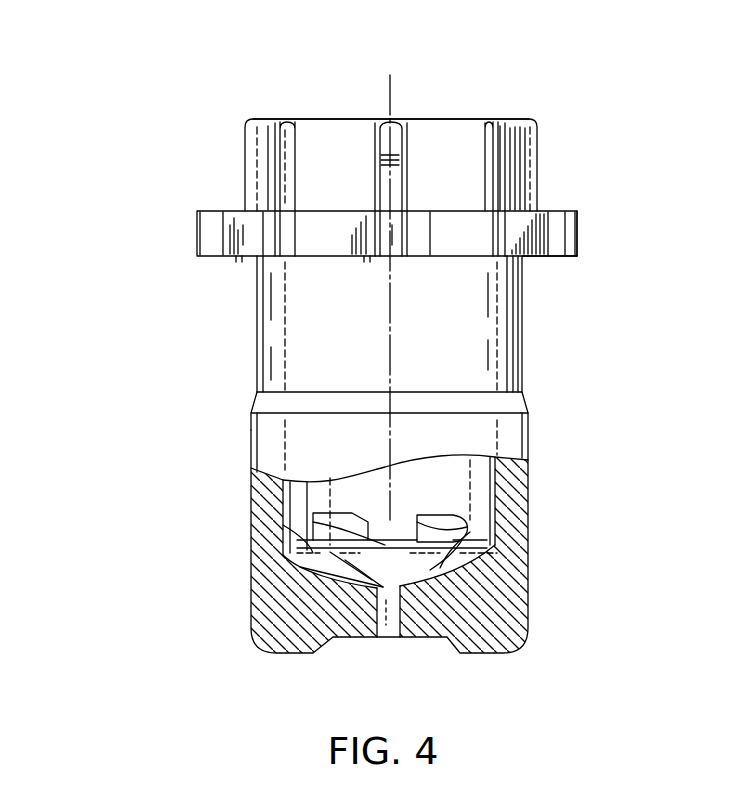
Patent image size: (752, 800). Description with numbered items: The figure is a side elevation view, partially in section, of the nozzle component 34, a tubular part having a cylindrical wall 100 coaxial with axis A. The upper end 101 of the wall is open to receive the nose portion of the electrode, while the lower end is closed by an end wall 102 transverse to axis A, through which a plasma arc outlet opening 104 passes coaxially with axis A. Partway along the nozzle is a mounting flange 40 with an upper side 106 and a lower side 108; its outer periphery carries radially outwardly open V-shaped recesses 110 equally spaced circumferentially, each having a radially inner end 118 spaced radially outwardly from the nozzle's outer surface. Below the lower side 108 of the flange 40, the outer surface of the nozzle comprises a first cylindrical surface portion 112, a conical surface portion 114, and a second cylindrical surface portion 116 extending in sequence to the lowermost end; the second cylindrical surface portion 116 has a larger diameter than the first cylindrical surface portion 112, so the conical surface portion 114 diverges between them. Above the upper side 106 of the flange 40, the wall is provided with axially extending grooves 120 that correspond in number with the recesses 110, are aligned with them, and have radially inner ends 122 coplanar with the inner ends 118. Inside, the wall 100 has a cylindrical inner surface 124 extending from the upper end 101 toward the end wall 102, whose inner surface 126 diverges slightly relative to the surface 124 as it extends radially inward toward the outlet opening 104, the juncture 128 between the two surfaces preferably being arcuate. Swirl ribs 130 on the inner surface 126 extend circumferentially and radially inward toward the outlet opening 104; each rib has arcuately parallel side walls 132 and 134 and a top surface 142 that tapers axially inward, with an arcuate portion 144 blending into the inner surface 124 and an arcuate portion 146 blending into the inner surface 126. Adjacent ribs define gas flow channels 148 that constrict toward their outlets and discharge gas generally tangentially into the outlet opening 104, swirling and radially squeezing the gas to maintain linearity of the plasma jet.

The axis A is at (395, 87).
The nozzle component 34 is at (177, 385).
The mounting flange 40 is at (582, 233).
The cylindrical wall 100 is at (510, 342).
The upper end 101 is at (507, 120).
The end wall 102 is at (480, 617).
The plasma arc outlet opening 104 is at (398, 643).
The upper side 106 is at (557, 210).
The lower side 108 is at (555, 260).
The V-shaped recesses 110 is at (238, 254).
The first cylindrical surface portion 112 is at (255, 332).
The conical surface portion 114 is at (253, 400).
The second cylindrical surface portion 116 is at (250, 487).
The radially inner end 118 is at (242, 231).
The axially extending grooves 120 is at (383, 147).
The radially inner ends 122 is at (248, 163).
The cylindrical inner surface 124 is at (480, 500).
The inner surface 126 is at (430, 568).
The juncture 128 is at (287, 553).
The swirl ribs 130 is at (355, 520).
The side wall 132 is at (463, 592).
The side wall 134 is at (368, 552).
The top surface 142 is at (318, 540).
The arcuate portion 144 is at (283, 525).
The arcuate portion 146 is at (360, 577).
The gas flow channels 148 is at (450, 540).